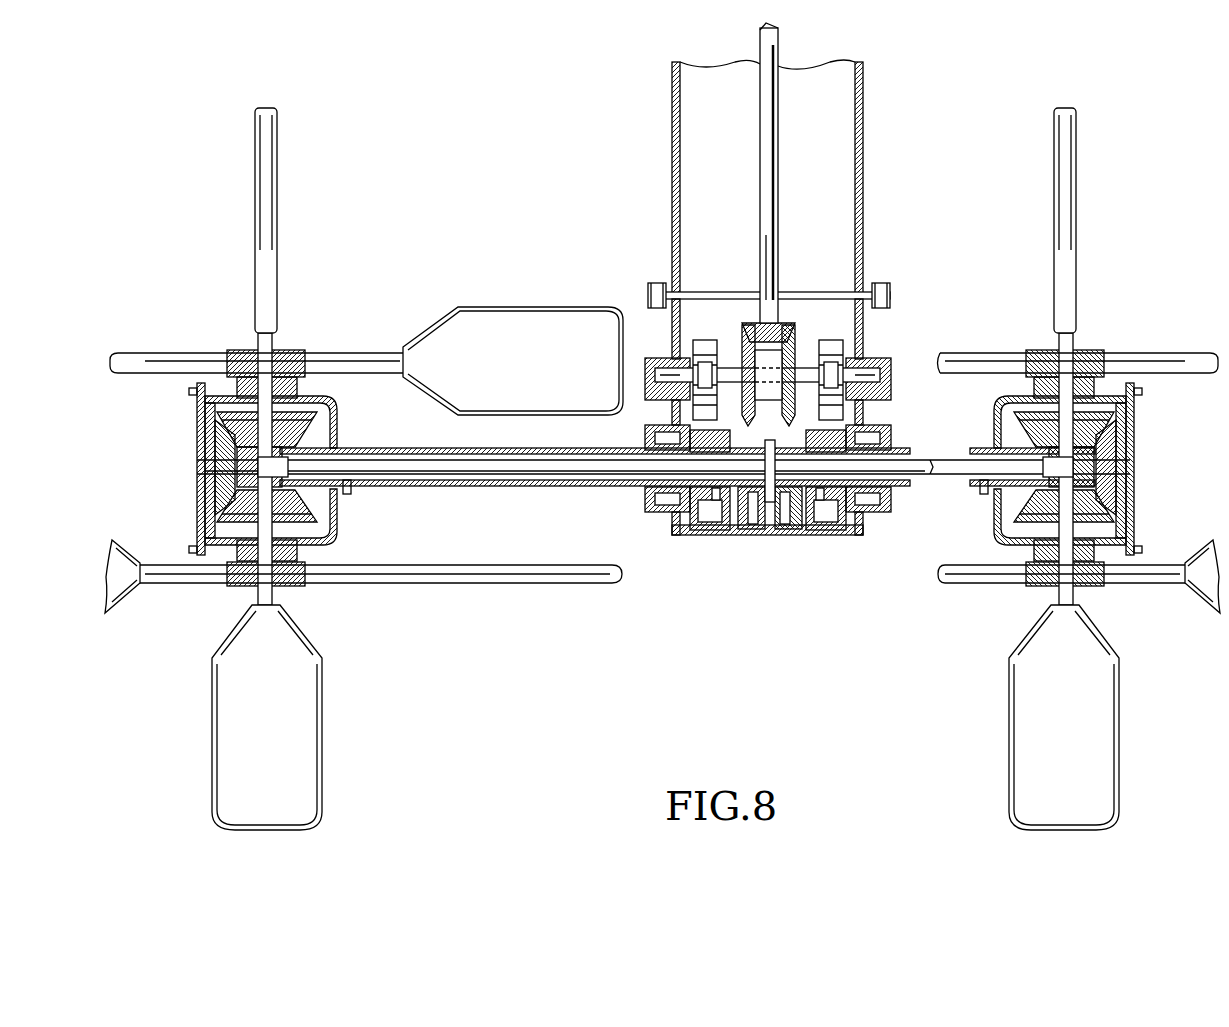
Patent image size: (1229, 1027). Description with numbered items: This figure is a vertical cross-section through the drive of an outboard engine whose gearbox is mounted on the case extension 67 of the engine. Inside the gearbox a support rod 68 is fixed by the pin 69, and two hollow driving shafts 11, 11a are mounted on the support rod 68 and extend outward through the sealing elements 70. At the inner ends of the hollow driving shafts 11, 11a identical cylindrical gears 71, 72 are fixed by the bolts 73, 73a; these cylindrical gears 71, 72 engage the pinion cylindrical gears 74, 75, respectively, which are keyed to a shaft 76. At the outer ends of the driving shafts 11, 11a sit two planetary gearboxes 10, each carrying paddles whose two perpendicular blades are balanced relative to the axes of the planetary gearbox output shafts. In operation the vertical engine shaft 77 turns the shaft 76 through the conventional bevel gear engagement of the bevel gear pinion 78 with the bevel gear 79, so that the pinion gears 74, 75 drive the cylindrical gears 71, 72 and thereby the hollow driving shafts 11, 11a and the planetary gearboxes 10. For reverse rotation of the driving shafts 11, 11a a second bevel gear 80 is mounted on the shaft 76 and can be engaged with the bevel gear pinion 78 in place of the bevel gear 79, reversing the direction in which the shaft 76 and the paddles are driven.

The planetary gearbox 10 is at (185, 470).
The hollow driving shaft 11 is at (430, 487).
The hollow driving shaft 11a is at (905, 488).
The case extension 67 is at (865, 147).
The support rod 68 is at (527, 462).
The pin 69 is at (770, 510).
The sealing element 70 is at (648, 512).
The cylindrical gear 71 is at (700, 530).
The cylindrical gear 72 is at (838, 530).
The bolt 73 is at (728, 500).
The bolt 73a is at (812, 500).
The pinion cylindrical gear 74 is at (705, 355).
The pinion cylindrical gear 75 is at (832, 355).
The shaft 76 is at (730, 380).
The engine shaft 77 is at (770, 205).
The bevel gear pinion 78 is at (790, 318).
The bevel gear 79 is at (748, 318).
The bevel gear 80 is at (800, 322).